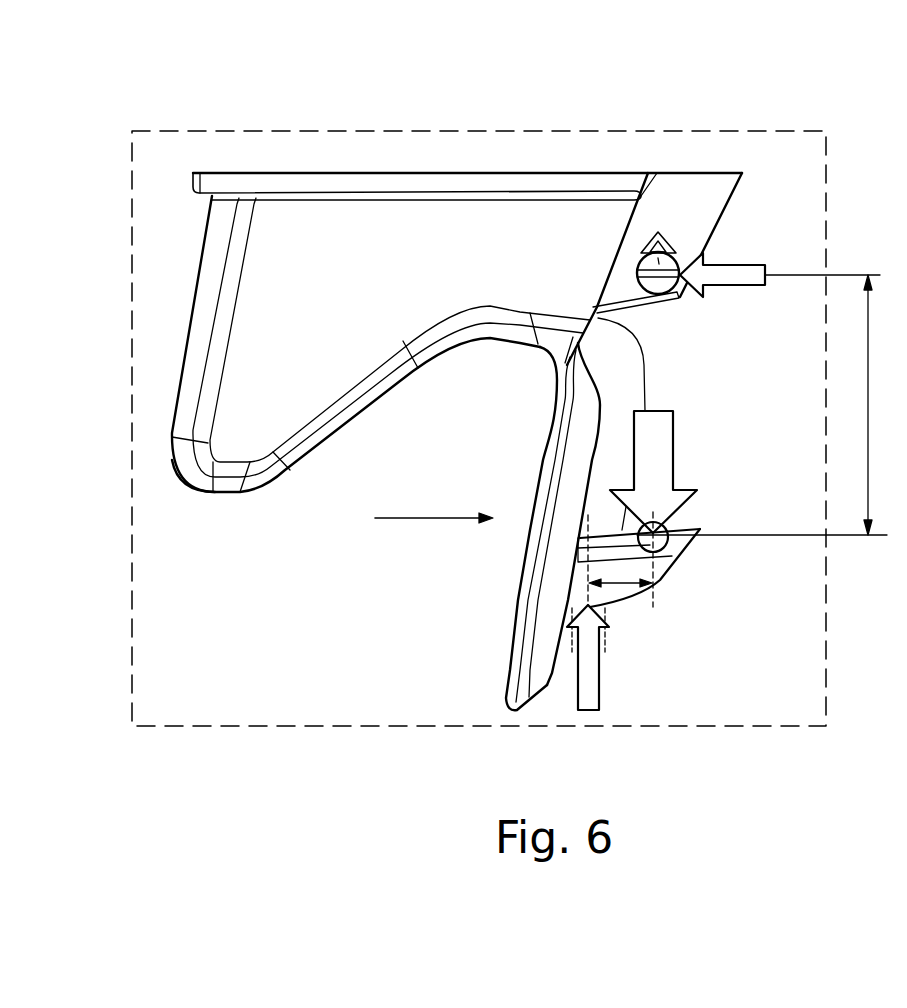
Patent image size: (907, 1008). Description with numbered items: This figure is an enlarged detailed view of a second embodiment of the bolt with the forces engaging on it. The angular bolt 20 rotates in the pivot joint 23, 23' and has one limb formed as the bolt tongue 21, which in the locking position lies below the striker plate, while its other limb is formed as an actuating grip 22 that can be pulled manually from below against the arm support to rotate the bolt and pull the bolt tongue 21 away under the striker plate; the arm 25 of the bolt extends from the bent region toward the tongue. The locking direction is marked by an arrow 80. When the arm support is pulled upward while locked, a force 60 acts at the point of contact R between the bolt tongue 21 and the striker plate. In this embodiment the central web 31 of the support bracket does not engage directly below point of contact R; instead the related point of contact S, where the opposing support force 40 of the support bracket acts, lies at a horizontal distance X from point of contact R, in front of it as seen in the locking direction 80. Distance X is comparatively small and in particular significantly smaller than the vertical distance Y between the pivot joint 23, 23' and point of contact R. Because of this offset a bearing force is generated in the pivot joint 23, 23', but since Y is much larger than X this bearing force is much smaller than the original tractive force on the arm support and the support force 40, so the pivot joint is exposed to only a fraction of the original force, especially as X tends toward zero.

The angular bolt 20 is at (237, 131).
The bolt tongue 21 is at (690, 538).
The actuating grip 22 is at (223, 493).
The pivot joint 23 is at (666, 293).
The pivot joint 23' is at (658, 273).
The arm of the holder 25 is at (510, 648).
The central web 31 is at (573, 653).
The support force 40 is at (590, 713).
The force 60 is at (673, 467).
The locking direction 80 is at (425, 517).
The point of contact S is at (587, 607).
The point of contact R is at (673, 548).
The horizontal distance X is at (620, 566).
The vertical distance Y is at (763, 405).